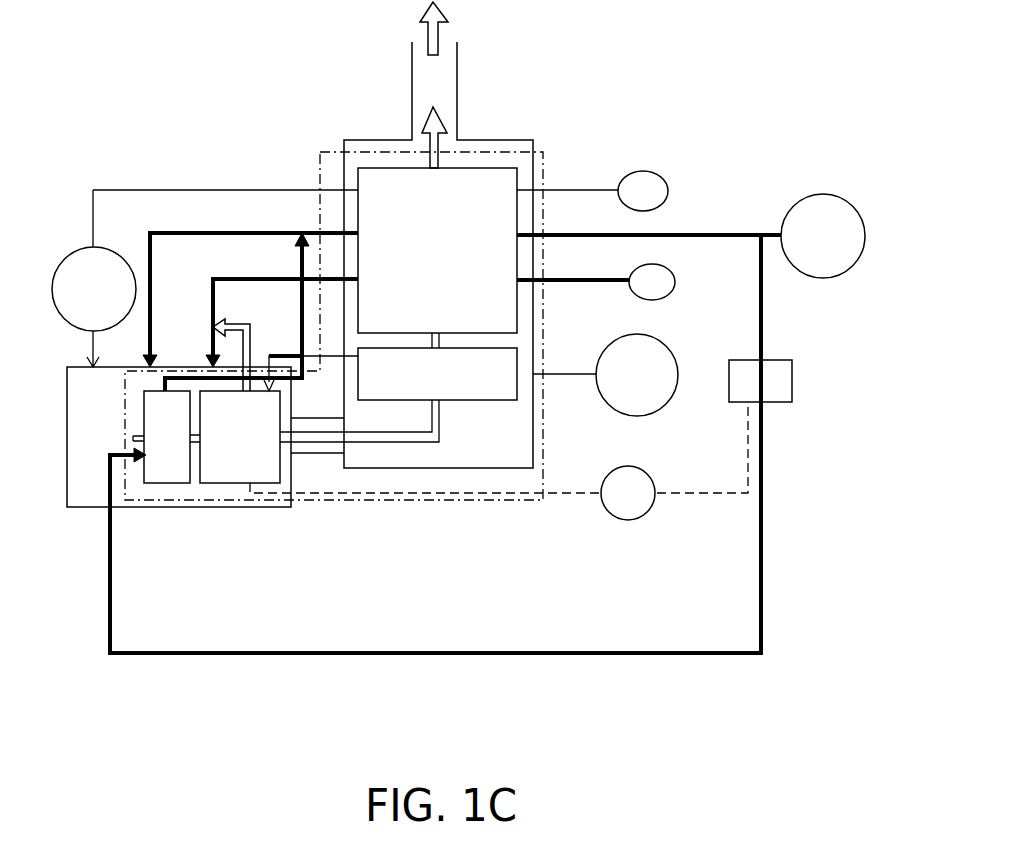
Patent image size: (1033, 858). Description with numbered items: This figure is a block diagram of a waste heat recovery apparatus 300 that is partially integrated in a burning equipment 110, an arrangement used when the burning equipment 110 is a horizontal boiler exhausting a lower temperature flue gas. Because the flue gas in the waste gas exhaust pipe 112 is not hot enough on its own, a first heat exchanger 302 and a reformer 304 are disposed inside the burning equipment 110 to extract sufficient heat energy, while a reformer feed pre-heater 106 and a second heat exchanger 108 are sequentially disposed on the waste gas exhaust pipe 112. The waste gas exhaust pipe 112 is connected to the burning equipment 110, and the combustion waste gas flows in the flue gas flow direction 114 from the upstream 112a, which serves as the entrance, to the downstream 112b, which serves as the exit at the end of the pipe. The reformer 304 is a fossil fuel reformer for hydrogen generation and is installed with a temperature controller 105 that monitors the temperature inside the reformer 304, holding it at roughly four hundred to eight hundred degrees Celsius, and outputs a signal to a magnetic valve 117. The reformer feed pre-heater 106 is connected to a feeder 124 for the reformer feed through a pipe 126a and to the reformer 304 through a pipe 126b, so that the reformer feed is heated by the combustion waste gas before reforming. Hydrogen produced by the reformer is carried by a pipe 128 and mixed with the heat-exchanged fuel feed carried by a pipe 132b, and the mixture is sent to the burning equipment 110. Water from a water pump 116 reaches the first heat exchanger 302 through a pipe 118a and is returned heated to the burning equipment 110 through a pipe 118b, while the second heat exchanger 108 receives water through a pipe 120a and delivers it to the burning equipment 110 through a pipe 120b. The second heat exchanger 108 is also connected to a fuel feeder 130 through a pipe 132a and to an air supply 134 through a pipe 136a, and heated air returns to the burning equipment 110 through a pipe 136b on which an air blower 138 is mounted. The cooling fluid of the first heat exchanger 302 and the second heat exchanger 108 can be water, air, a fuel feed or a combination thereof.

The temperature controller 105 is at (499, 461).
The reformer feed pre-heater 106 is at (398, 395).
The second heat exchanger 108 is at (437, 258).
The burning equipment 110 is at (90, 508).
The waste gas exhaust pipe 112 is at (327, 455).
The upstream of the waste gas exhaust pipe 112a is at (310, 448).
The downstream of the waste gas exhaust pipe 112b is at (443, 77).
The flue gas flow direction 114 is at (440, 138).
The water pump 116 is at (823, 236).
The magnetic valve 117 is at (760, 381).
The pipe 118a is at (668, 655).
The pipe 118b is at (297, 272).
The pipe 120a is at (685, 235).
The pipe 120b is at (255, 232).
The feeder 124 is at (637, 375).
The pipe 126a is at (583, 372).
The pipe 126b is at (287, 355).
The pipe 128 is at (240, 353).
The fuel feeder 130 is at (652, 282).
The pipe 132a is at (557, 280).
The pipe 132b is at (210, 308).
The air supply 134 is at (643, 191).
The pipe 136a is at (582, 188).
The pipe 136b is at (228, 188).
The air blower 138 is at (94, 278).
The waste heat recovery apparatus 300 is at (332, 147).
The first heat exchanger 302 is at (166, 437).
The reformer 304 is at (240, 437).